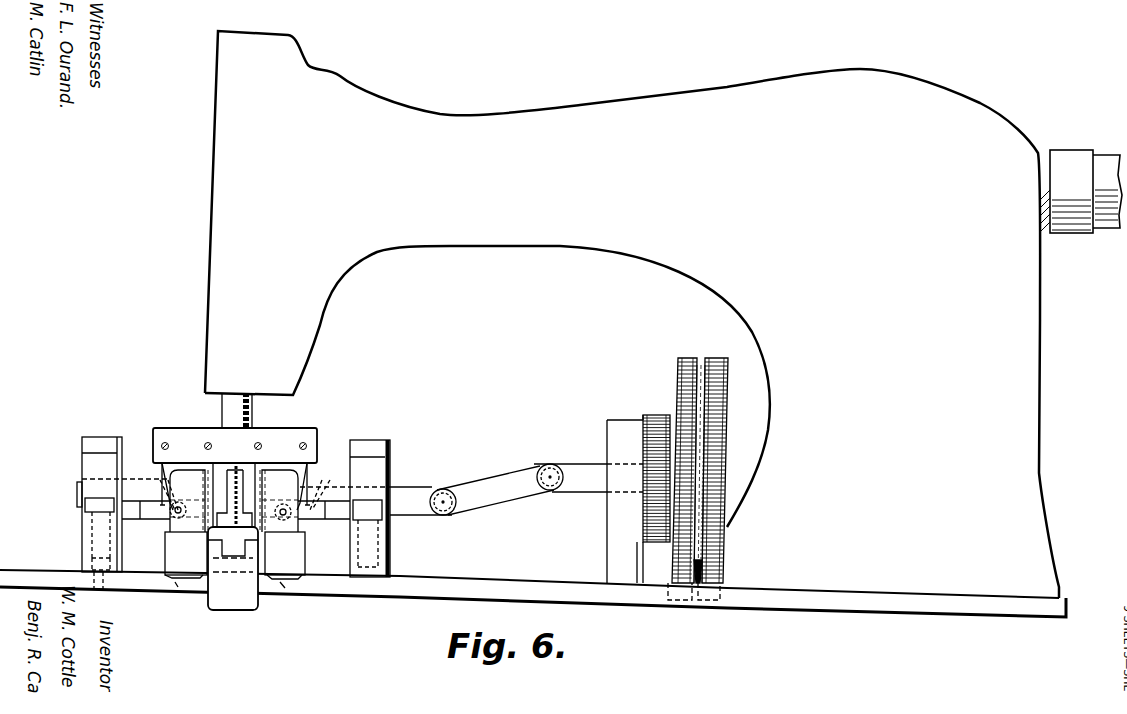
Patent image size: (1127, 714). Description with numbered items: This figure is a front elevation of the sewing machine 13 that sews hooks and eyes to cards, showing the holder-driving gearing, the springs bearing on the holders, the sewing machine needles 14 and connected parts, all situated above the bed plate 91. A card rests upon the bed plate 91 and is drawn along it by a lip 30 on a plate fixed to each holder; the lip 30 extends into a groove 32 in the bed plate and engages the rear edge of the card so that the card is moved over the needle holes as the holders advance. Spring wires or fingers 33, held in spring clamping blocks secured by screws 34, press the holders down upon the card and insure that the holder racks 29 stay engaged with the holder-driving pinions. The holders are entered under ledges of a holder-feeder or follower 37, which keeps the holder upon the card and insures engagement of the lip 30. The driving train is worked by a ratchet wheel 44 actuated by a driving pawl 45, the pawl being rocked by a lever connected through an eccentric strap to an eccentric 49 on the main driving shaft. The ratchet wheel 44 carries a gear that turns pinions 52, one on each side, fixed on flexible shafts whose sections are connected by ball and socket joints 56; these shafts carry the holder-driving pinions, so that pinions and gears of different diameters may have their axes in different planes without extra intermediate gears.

The sewing machine 13 is at (663, 314).
The sewing machine needles 14 is at (163, 546).
The holder rack 29 is at (162, 615).
The lip 30 is at (189, 574).
The groove 32 is at (178, 587).
The spring wires or fingers 33 is at (322, 488).
The screws 34 is at (173, 505).
The holder-feeder or follower 37 is at (247, 482).
The ratchet wheel 44 is at (678, 392).
The driving pawl 45 is at (728, 479).
The eccentric 49 is at (420, 481).
The gear or pinion 52 is at (643, 514).
The ball and socket joint 56 is at (536, 466).
The bed plate 91 is at (518, 590).